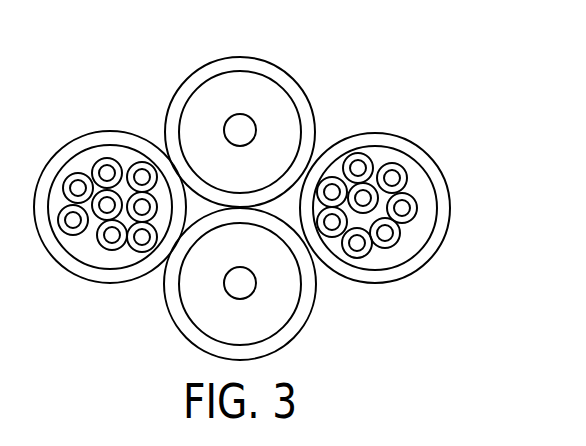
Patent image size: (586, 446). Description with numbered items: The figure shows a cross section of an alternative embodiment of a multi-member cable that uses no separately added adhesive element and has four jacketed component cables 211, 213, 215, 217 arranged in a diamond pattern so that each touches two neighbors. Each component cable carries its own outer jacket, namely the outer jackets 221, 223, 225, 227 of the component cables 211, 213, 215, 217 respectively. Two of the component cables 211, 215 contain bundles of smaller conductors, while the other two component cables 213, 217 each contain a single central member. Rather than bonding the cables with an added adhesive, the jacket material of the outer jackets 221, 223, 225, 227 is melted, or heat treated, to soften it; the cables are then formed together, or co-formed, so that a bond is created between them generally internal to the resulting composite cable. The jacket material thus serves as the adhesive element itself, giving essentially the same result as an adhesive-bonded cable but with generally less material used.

The component cable 211 is at (423, 187).
The component cable 213 is at (283, 102).
The component cable 215 is at (75, 250).
The component cable 217 is at (205, 313).
The outer jacket 221 is at (450, 208).
The outer jacket 223 is at (241, 56).
The outer jacket 225 is at (73, 142).
The outer jacket 227 is at (307, 320).